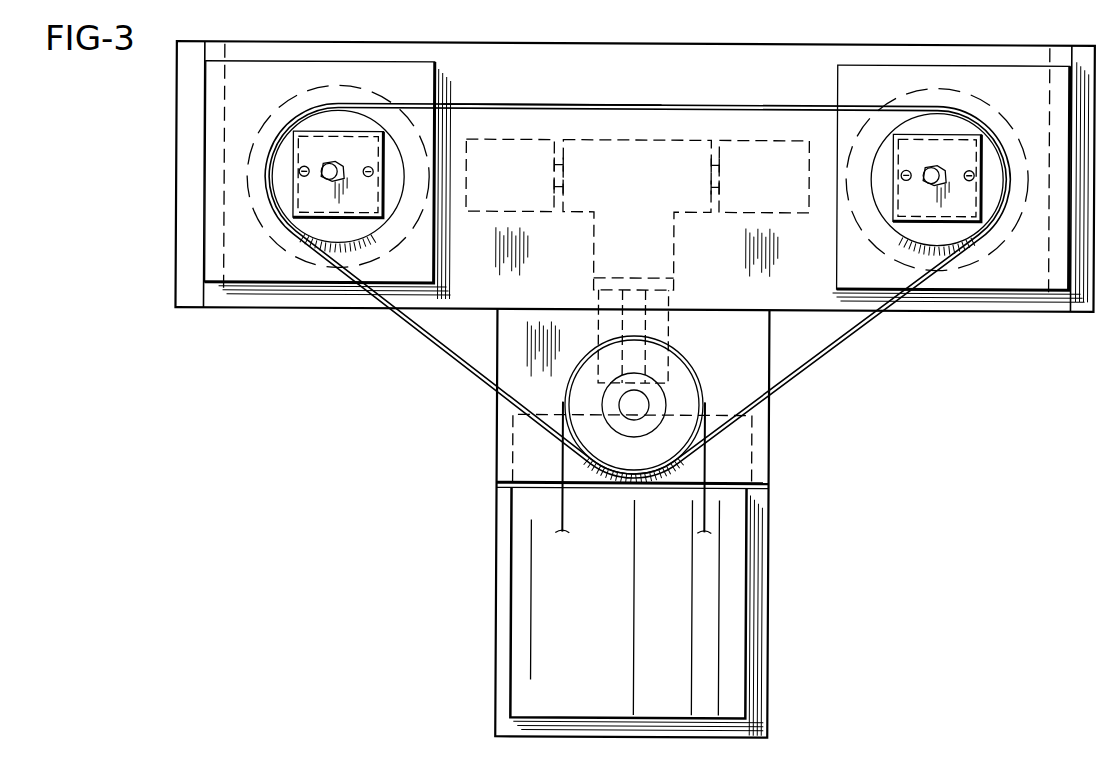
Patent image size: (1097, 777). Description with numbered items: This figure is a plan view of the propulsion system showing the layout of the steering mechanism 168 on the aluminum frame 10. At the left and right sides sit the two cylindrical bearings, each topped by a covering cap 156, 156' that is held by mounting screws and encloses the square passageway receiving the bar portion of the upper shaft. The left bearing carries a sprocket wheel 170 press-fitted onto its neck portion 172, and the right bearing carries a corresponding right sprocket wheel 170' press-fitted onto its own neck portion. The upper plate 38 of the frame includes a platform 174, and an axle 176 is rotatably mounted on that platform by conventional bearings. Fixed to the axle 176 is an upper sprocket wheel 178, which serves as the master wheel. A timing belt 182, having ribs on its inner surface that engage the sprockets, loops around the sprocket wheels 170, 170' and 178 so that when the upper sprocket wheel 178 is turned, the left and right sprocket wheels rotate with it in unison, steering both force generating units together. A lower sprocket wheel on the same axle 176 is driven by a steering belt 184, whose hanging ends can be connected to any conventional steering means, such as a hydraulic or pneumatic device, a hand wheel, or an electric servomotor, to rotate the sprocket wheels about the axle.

The aluminum frame 10 is at (722, 43).
The upper plate 38 is at (683, 83).
The covering cap 156 is at (338, 174).
The covering cap 156' is at (937, 177).
The steering mechanism 168 is at (727, 106).
The sprocket wheel 170 is at (346, 160).
The right sprocket wheel 170' is at (952, 167).
The neck portion 172 is at (291, 155).
The platform 174 is at (760, 368).
The axle 176 is at (637, 420).
The upper sprocket wheel 178 is at (682, 375).
The timing belt 182 is at (546, 105).
The steering belt 184 is at (700, 520).